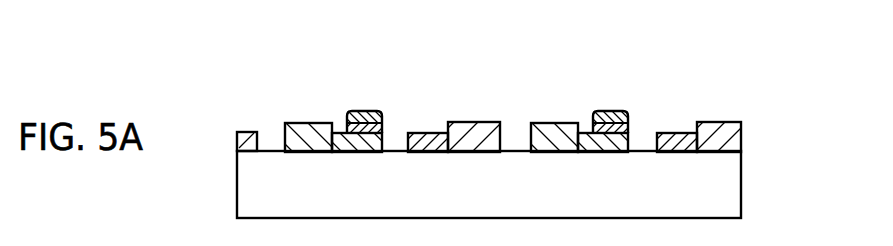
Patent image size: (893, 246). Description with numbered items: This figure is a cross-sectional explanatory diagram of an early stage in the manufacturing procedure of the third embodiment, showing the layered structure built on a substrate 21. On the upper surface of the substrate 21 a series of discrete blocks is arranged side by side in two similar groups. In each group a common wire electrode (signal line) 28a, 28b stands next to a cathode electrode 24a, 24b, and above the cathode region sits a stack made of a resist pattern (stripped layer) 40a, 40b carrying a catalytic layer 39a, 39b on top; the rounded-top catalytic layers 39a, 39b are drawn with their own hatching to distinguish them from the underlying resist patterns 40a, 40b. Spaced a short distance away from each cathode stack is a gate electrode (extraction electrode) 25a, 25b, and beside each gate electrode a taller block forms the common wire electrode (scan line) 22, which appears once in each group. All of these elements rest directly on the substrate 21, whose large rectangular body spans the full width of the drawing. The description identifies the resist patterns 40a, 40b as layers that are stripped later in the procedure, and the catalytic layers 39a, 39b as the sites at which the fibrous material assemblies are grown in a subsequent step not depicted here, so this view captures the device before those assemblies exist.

The substrate 21 is at (728, 183).
The common wire electrode (scan line) 22 is at (473, 131).
The cathode electrode 24a is at (335, 86).
The cathode electrode 24b is at (584, 85).
The gate electrode (extraction electrode) 25a is at (428, 132).
The gate electrode (extraction electrode) 25b is at (677, 132).
The common wire electrode (signal line) 28a is at (303, 128).
The common wire electrode (signal line) 28b is at (552, 128).
The catalytic layer 39a is at (375, 110).
The catalytic layer 39b is at (625, 110).
The resist pattern (stripped layer) 40a is at (363, 110).
The resist pattern (stripped layer) 40b is at (611, 110).